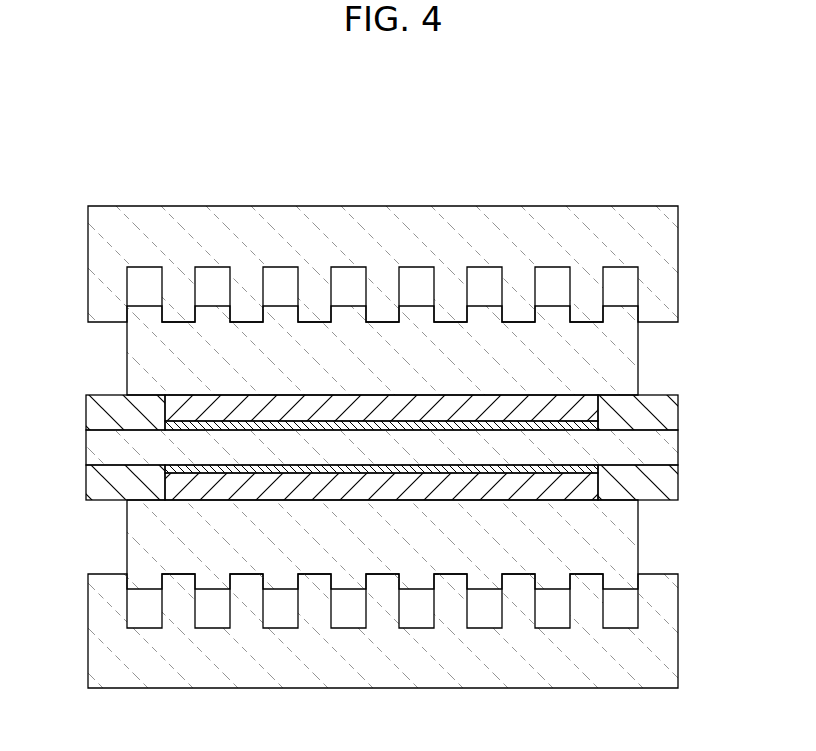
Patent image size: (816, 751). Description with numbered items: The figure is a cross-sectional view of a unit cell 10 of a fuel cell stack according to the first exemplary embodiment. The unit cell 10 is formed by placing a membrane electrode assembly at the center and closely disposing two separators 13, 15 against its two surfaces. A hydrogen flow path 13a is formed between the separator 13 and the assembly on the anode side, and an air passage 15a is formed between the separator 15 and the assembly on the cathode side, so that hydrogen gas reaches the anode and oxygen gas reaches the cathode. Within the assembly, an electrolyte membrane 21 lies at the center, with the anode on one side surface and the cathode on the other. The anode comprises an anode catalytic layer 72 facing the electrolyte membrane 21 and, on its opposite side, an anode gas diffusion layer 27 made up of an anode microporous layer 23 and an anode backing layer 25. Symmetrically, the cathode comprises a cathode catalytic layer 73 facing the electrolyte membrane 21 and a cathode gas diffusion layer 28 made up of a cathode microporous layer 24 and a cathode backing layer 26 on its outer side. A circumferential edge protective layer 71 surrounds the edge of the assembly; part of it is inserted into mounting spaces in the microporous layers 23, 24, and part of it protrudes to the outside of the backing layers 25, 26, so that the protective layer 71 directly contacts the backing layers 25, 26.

The unit cell 10 is at (372, 131).
The separator 13 is at (548, 222).
The hydrogen flow path 13a is at (143, 282).
The separator 15 is at (503, 681).
The air passage 15a is at (143, 610).
The electrolyte membrane 21 is at (663, 447).
The anode microporous layer 23 is at (546, 410).
The cathode microporous layer 24 is at (565, 488).
The anode backing layer 25 is at (637, 346).
The cathode backing layer 26 is at (637, 556).
The anode gas diffusion layer 27 is at (443, 363).
The cathode gas diffusion layer 28 is at (443, 531).
The circumferential edge protective layer 71 is at (100, 410).
The anode catalytic layer 72 is at (193, 426).
The cathode catalytic layer 73 is at (198, 470).